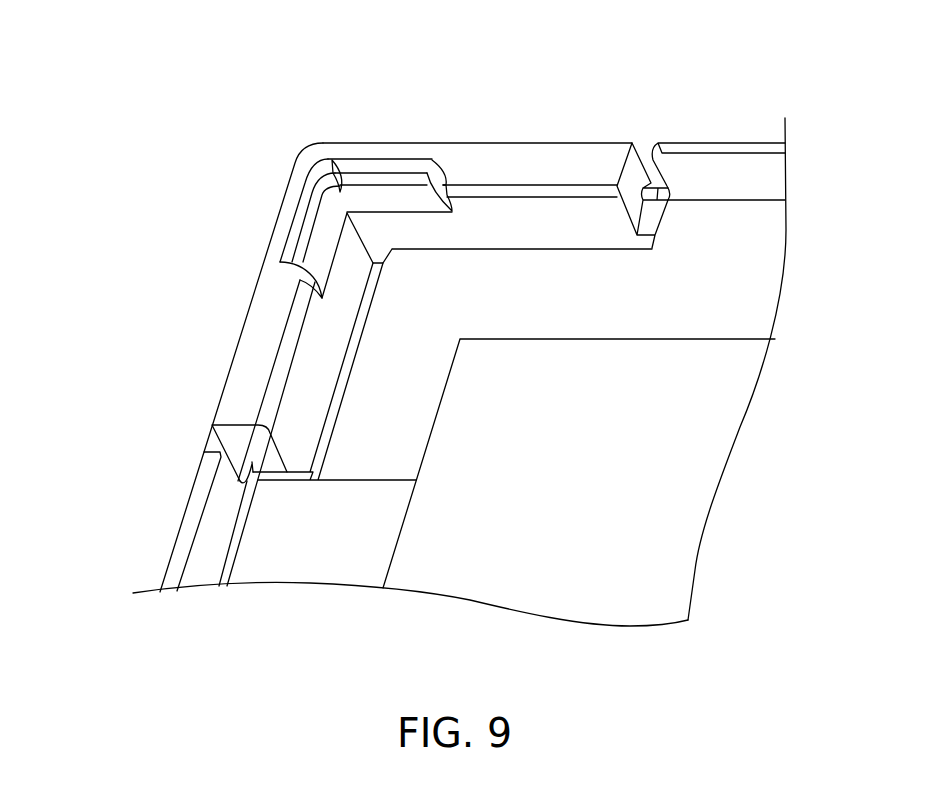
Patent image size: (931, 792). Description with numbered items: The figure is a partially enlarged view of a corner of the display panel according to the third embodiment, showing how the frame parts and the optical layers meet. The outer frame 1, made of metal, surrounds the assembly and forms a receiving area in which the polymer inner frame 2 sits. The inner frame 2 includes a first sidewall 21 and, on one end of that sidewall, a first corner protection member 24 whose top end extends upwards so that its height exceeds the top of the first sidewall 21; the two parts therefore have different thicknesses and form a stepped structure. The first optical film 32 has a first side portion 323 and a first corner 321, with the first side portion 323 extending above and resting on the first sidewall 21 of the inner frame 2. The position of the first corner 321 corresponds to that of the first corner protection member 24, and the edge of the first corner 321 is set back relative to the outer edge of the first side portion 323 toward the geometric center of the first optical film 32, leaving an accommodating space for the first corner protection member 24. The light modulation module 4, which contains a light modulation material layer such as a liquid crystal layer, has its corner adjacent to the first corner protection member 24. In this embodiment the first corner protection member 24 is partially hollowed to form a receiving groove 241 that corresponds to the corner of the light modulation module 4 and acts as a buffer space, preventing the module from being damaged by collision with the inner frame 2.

The outer frame 1 is at (192, 518).
The inner frame 2 is at (432, 325).
The first sidewall 21 is at (245, 517).
The first corner protection member 24 is at (557, 163).
The receiving groove 241 is at (340, 192).
The first optical film 32 is at (378, 358).
The first corner 321 is at (418, 300).
The first side portion 323 is at (308, 543).
The light modulation module 4 is at (527, 565).